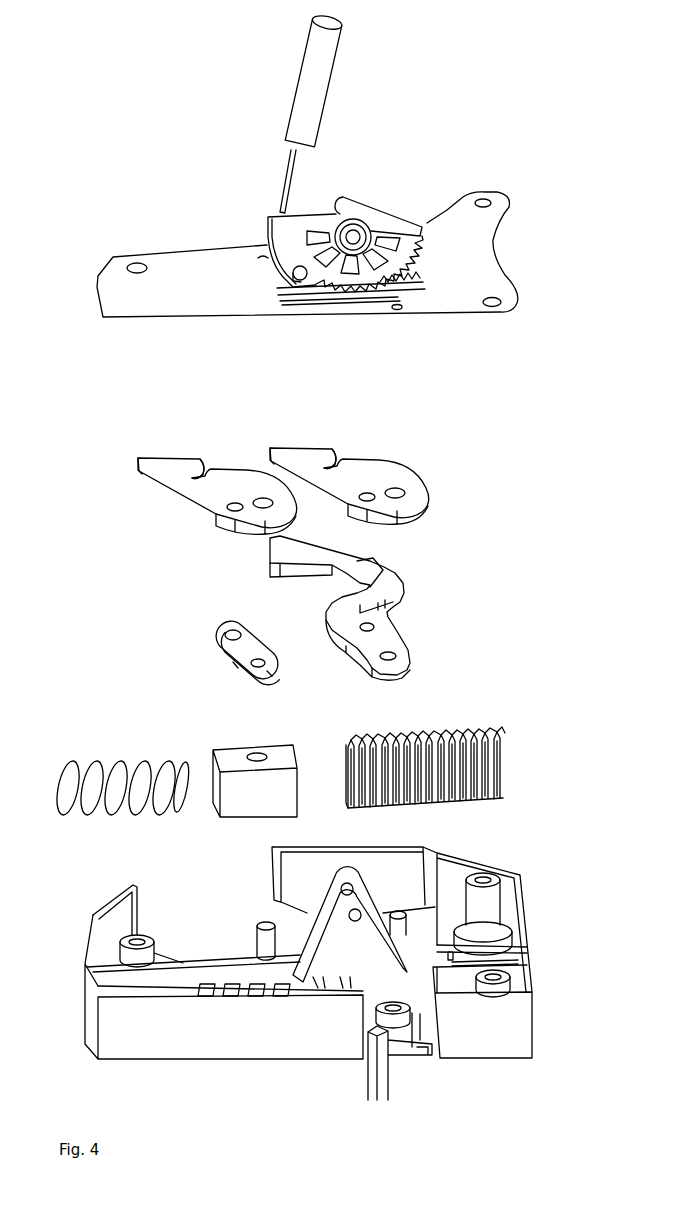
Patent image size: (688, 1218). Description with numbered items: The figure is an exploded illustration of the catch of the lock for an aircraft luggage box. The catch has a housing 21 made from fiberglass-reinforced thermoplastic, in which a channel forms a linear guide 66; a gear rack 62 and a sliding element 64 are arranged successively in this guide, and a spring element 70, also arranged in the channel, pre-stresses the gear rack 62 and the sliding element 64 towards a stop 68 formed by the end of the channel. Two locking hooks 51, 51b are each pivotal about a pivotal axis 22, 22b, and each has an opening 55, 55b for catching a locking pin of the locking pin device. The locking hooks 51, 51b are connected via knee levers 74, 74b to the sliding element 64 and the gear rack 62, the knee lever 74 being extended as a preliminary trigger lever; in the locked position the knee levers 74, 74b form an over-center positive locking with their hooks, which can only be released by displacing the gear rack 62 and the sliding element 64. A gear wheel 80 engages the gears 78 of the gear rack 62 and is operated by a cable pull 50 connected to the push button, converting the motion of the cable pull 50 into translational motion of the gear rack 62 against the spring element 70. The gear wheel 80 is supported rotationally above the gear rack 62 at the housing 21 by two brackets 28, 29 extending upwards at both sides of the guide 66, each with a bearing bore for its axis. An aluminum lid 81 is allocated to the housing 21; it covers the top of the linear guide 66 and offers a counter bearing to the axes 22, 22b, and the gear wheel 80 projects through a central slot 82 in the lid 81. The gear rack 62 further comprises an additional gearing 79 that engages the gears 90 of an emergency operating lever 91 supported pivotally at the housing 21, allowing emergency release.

The cable pull 50 is at (293, 180).
The gear wheel 80 is at (360, 207).
The lid 81 is at (476, 254).
The central slot 82 is at (407, 280).
The locking hook 51 is at (178, 457).
The opening 55 is at (213, 460).
The locking hook 51b is at (384, 465).
The opening 55b is at (345, 453).
The knee lever 74 is at (250, 647).
The knee lever 74b is at (377, 642).
The spring element 70 is at (65, 790).
The sliding element 64 is at (247, 792).
The gear rack 62 is at (465, 750).
The gears 78 is at (477, 732).
The additional gearing 79 is at (450, 790).
The bracket 29 is at (362, 888).
The pivotal axis 22 is at (262, 922).
The pivotal axis 22b is at (407, 916).
The housing 21 is at (529, 945).
The linear guide 66 is at (182, 975).
The stop 68 is at (501, 962).
The bracket 28 is at (339, 971).
The emergency operating lever 91 is at (378, 1077).
The gears 90 is at (423, 1012).